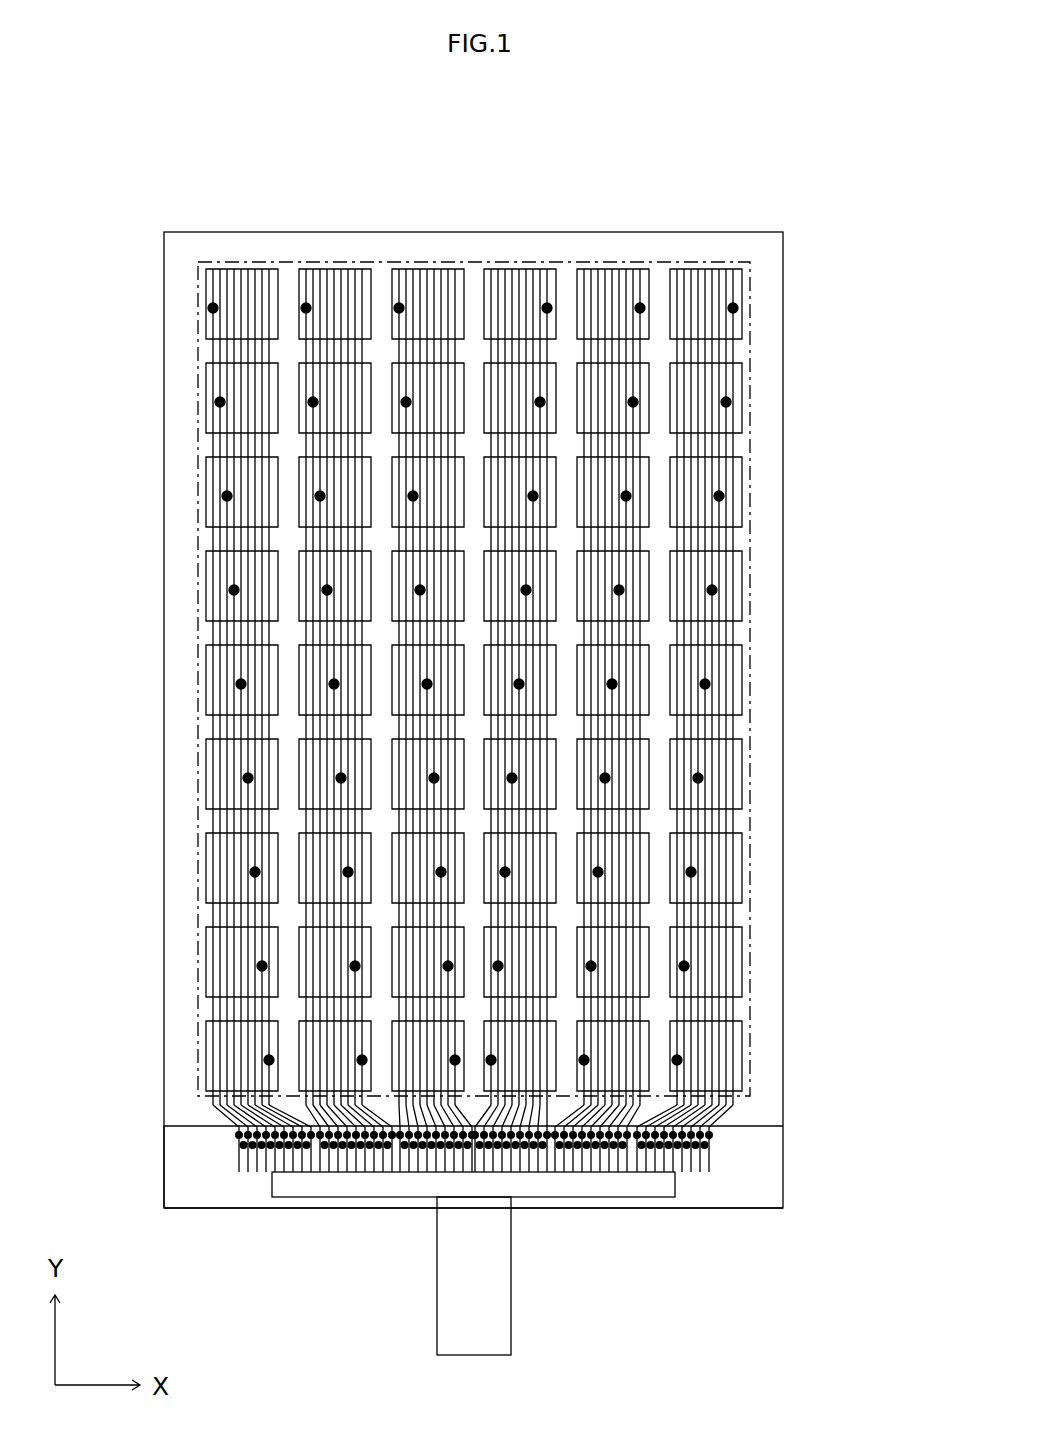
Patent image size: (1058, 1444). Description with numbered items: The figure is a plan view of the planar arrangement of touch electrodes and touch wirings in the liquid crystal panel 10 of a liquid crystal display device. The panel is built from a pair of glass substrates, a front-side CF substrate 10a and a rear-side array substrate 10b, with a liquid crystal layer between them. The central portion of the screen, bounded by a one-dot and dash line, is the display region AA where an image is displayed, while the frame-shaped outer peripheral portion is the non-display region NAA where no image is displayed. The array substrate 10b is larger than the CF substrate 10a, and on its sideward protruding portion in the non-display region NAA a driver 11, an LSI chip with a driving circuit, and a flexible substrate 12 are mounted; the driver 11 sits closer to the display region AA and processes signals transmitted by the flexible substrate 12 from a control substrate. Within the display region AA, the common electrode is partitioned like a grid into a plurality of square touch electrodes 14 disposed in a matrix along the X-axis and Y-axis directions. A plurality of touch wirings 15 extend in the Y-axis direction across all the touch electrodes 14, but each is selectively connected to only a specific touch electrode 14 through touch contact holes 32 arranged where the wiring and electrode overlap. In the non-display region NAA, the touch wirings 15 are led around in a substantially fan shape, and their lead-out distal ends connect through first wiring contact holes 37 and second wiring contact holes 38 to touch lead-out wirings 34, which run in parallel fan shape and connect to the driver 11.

The liquid crystal panel 10 is at (146, 1228).
The display region AA is at (280, 262).
The touch electrode 14 is at (500, 268).
The touch wiring 15 is at (440, 290).
The touch contact hole 32 is at (398, 308).
The CF substrate 10a is at (187, 1126).
The touch lead-out wiring 34 is at (270, 1155).
The first wiring contact hole 37 is at (248, 1146).
The second wiring contact hole 38 is at (243, 1148).
The driver 11 is at (655, 1180).
The flexible substrate 12 is at (512, 1310).
The array substrate 10b is at (728, 1210).
The non-display region NAA is at (238, 1180).